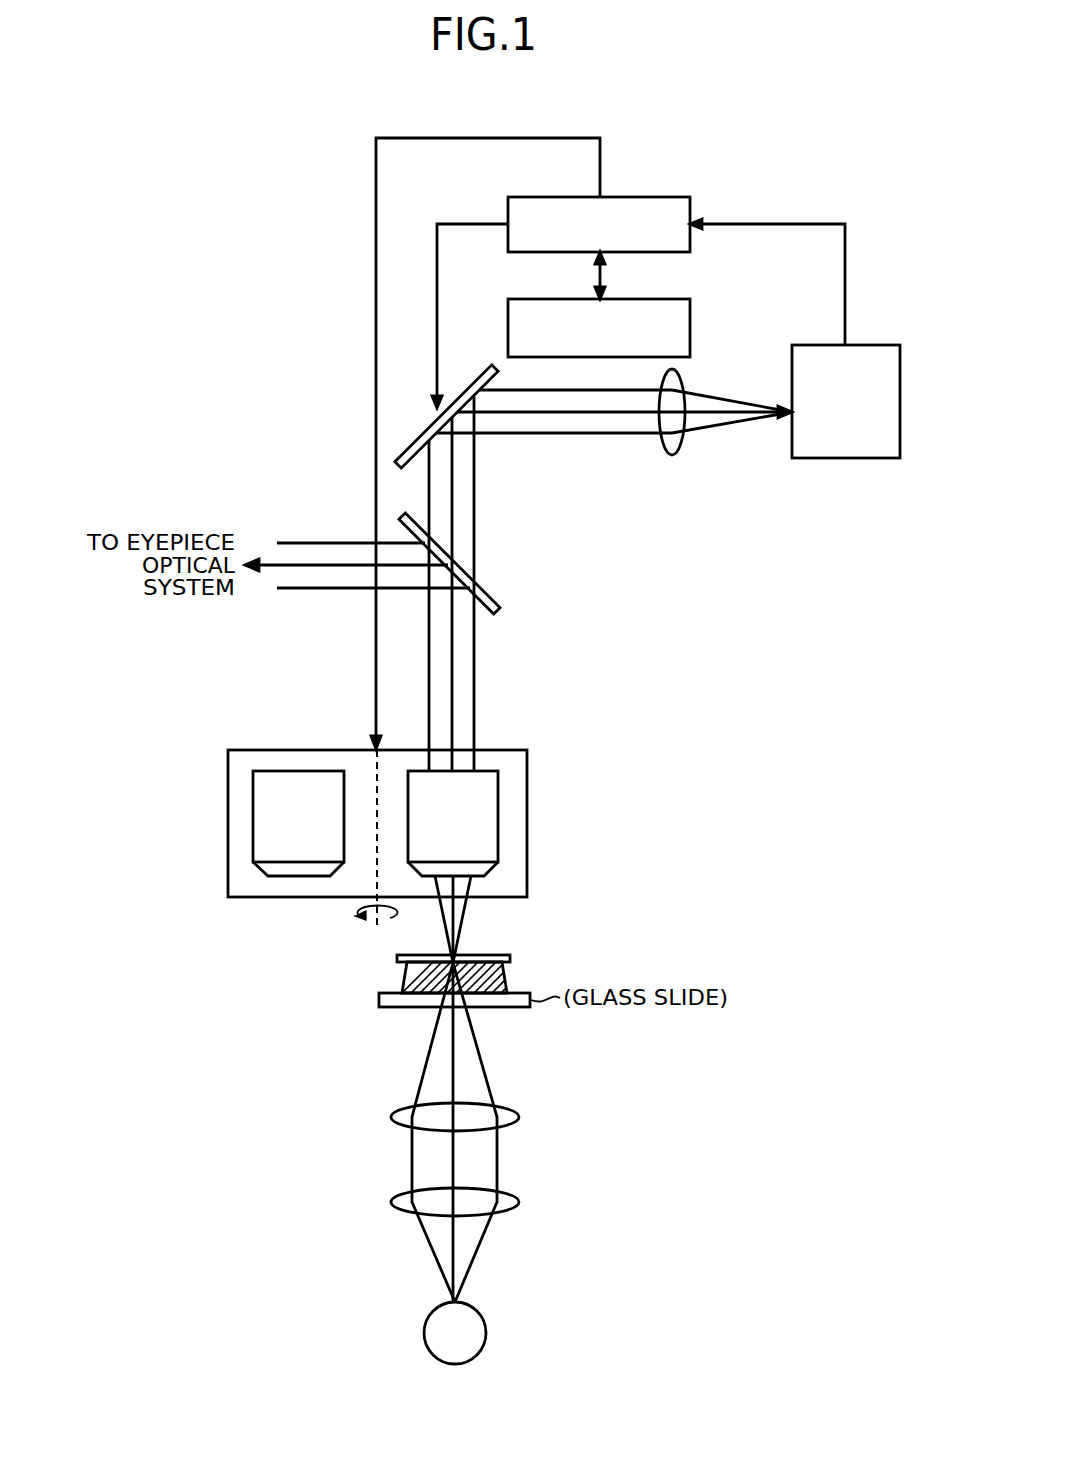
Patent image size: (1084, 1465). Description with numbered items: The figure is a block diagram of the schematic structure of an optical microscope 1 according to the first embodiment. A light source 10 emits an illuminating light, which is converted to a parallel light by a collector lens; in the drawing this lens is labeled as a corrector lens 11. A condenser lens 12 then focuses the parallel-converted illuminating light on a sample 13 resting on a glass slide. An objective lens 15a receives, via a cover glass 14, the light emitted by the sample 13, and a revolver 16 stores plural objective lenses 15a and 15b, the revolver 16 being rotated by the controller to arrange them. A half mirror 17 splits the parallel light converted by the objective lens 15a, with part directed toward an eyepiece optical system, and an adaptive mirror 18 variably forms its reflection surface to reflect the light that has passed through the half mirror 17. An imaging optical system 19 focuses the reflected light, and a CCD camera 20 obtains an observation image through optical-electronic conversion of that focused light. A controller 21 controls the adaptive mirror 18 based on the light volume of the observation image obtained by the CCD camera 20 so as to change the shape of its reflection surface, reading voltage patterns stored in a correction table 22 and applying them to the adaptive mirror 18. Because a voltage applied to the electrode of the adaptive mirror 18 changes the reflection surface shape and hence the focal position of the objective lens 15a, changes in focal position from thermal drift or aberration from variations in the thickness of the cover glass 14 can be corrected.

The optical microscope 1 is at (740, 144).
The light source 10 is at (481, 1313).
The corrector lens 11 is at (515, 1197).
The condenser lens 12 is at (512, 1108).
The sample 13 is at (508, 983).
The cover glass 14 is at (512, 958).
The objective lens 15a is at (499, 795).
The objective lens 15b is at (297, 771).
The revolver 16 is at (262, 749).
The half mirror 17 is at (490, 590).
The adaptive mirror 18 is at (397, 445).
The imaging optical system 19 is at (673, 456).
The CCD camera 20 is at (860, 346).
The controller 21 is at (632, 197).
The correction table 22 is at (632, 300).